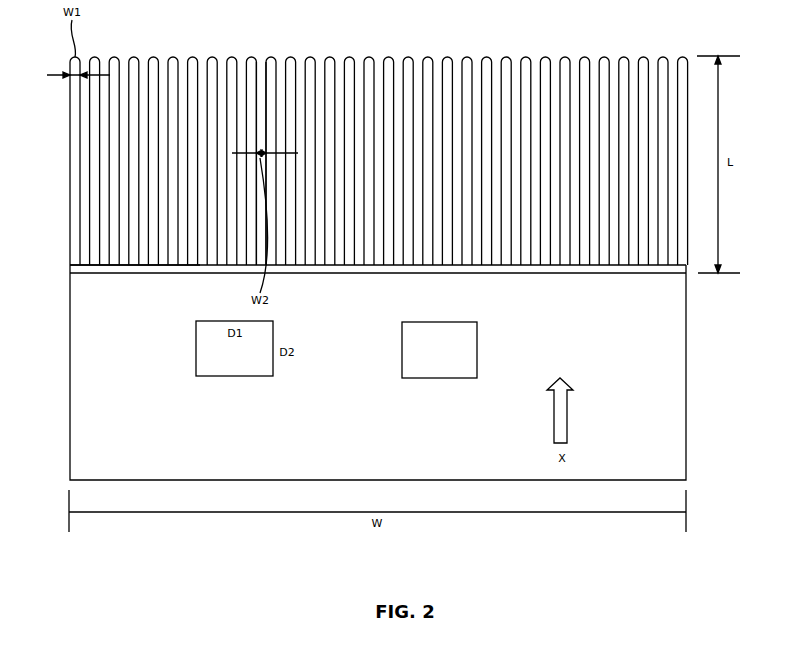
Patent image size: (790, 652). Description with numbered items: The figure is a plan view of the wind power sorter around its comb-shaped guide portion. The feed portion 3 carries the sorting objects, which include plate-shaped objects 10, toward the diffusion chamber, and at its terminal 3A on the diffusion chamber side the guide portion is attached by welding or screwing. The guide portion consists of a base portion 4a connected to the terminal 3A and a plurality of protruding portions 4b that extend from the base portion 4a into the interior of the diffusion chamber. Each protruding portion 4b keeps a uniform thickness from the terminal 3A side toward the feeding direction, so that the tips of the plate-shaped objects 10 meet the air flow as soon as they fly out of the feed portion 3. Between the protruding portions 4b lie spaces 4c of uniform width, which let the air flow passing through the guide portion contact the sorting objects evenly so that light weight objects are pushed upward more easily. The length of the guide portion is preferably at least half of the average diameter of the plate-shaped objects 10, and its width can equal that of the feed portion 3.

The feed portion 3 is at (655, 379).
The terminal of the feed portion 3A is at (78, 275).
The base portion 4a is at (568, 270).
The protruding portion 4b is at (74, 124).
The space 4c is at (261, 137).
The plate-shaped object 10 is at (215, 368).